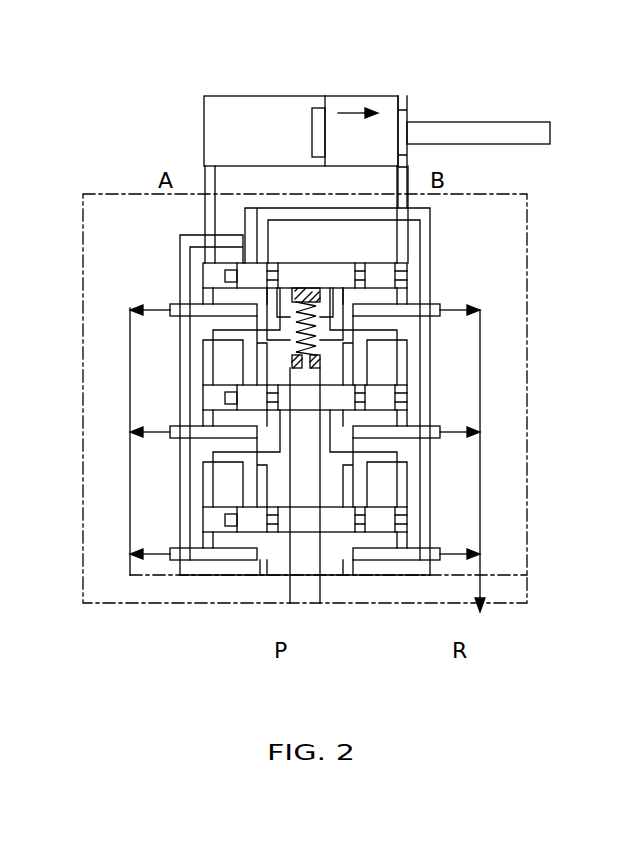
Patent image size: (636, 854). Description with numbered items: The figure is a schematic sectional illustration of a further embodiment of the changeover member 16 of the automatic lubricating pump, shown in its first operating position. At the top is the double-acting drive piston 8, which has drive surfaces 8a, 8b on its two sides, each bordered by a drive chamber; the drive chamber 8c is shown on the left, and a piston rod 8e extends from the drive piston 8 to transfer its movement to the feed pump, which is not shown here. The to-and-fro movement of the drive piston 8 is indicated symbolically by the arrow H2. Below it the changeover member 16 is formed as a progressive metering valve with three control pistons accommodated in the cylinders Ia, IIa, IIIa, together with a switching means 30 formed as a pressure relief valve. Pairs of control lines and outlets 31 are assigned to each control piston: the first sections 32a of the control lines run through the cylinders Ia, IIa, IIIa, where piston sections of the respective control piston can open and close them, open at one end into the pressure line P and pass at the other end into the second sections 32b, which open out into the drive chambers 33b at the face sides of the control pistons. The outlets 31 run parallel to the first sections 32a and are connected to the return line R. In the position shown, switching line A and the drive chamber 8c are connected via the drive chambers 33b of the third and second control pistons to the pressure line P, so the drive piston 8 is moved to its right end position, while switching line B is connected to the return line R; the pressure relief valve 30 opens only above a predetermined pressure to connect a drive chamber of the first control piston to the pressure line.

The drive piston 8 is at (330, 105).
The drive surface 8a is at (292, 105).
The drive surface 8b is at (412, 100).
The drive chamber 8c is at (226, 100).
The piston rod 8e is at (536, 122).
The arrow H2 is at (350, 98).
The changeover member 16 is at (548, 210).
The switching means 30 is at (330, 327).
The outlet 31 is at (210, 305).
The first section of control line 32a is at (255, 225).
The second section of control line 32b is at (200, 285).
The drive chamber 33b is at (228, 285).
The cylinder Ia is at (225, 560).
The cylinder IIa is at (217, 400).
The cylinder IIIa is at (230, 262).